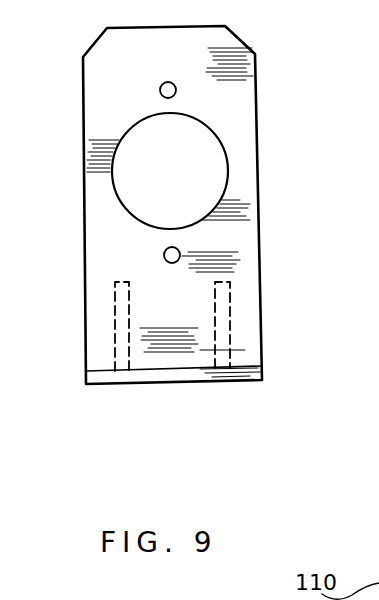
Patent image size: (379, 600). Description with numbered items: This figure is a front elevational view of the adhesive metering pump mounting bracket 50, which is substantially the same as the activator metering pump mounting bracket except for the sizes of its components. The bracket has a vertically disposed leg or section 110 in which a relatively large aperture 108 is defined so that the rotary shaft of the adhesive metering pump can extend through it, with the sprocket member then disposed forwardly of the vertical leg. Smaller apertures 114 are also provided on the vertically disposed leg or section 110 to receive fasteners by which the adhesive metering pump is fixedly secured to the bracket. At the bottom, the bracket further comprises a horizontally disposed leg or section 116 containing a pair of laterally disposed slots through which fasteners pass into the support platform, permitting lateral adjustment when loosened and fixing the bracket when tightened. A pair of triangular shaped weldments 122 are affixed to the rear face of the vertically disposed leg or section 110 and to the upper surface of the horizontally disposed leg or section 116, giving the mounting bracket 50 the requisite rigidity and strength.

The adhesive metering pump mounting bracket 50 is at (256, 126).
The aperture 108 is at (205, 117).
The vertically disposed leg or section 110 is at (187, 72).
The apertures 114 is at (160, 90).
The horizontally disposed leg or section 116 is at (203, 373).
The triangular shaped weldments 122 is at (117, 333).